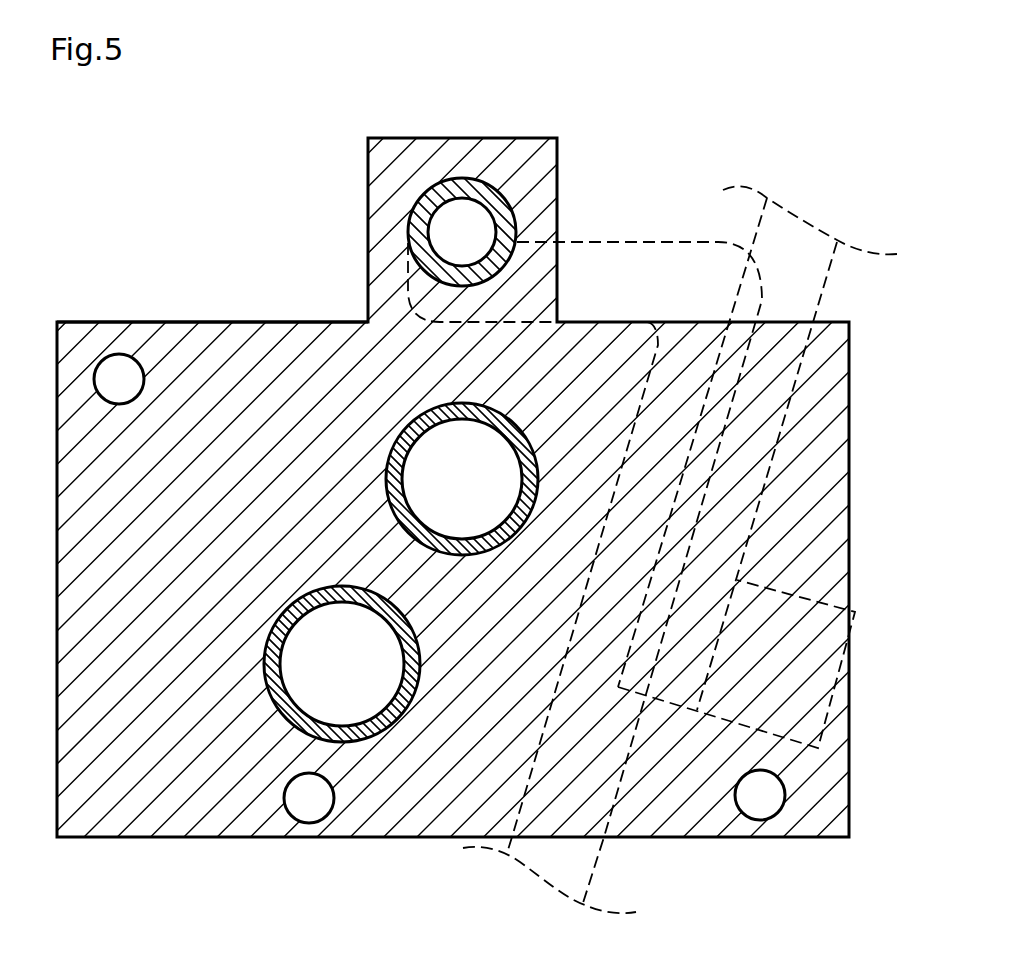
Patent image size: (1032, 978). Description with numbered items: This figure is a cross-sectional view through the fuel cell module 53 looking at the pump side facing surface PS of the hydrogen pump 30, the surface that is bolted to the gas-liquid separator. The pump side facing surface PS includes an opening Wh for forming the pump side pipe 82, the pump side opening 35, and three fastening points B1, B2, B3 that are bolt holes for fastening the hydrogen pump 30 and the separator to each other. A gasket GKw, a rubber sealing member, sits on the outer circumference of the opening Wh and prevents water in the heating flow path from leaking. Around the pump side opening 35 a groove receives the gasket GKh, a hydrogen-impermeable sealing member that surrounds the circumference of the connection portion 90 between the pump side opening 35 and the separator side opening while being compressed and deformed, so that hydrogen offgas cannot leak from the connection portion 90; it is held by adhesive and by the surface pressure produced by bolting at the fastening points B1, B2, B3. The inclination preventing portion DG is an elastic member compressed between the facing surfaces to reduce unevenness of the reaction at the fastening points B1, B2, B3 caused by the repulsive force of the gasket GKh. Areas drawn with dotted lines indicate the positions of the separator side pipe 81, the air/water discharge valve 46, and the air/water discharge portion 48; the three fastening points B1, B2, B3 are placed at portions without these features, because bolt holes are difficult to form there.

The hydrogen pump 30 is at (181, 217).
The pump side facing surface PS is at (213, 322).
The fastening point B1 is at (118, 354).
The fastening point B2 is at (309, 823).
The fastening point B3 is at (758, 820).
The pump side pipe 82 is at (375, 216).
The opening Wh is at (453, 220).
The gasket GKw is at (518, 238).
The gasket GKh is at (420, 415).
The pump side opening 35 is at (514, 453).
The connection portion 90 is at (463, 442).
The inclination preventing portion DG is at (290, 606).
The fuel cell module 53 is at (718, 172).
The air/water discharge portion 48 is at (758, 498).
The air/water discharge valve 46 is at (788, 594).
The separator side pipe 81 is at (600, 847).